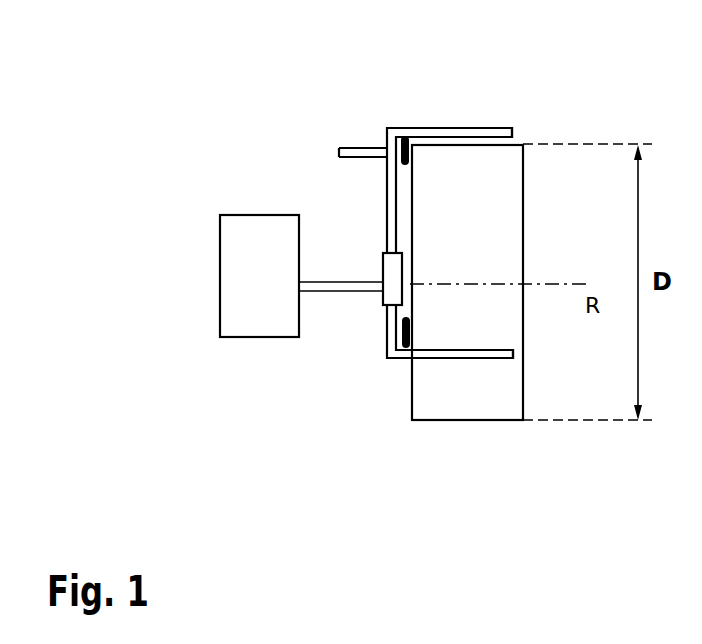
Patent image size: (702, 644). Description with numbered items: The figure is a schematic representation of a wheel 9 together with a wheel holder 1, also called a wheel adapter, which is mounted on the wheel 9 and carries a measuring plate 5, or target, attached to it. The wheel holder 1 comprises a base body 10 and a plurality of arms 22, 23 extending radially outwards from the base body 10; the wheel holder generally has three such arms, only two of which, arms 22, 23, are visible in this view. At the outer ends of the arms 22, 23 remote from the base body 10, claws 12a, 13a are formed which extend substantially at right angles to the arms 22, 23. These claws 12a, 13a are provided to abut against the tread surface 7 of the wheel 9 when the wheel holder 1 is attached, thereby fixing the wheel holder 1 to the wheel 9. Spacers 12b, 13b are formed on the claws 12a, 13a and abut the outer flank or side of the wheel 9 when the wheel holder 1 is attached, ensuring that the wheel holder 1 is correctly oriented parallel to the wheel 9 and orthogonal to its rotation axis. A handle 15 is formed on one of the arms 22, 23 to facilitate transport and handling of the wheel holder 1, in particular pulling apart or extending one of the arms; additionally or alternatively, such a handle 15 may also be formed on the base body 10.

The wheel holder 1 is at (324, 405).
The measuring plate 5 is at (235, 283).
The tread surface 7 is at (508, 172).
The wheel 9 is at (537, 361).
The base body 10 is at (383, 256).
The claw 12a is at (505, 120).
The spacer 12b is at (405, 160).
The claw 13a is at (402, 362).
The spacer 13b is at (400, 350).
The handle 15 is at (355, 140).
The arm 22 is at (387, 187).
The arm 23 is at (388, 330).